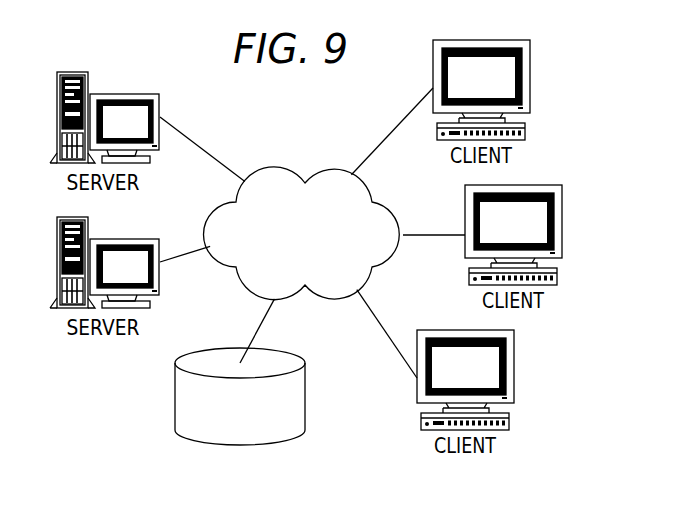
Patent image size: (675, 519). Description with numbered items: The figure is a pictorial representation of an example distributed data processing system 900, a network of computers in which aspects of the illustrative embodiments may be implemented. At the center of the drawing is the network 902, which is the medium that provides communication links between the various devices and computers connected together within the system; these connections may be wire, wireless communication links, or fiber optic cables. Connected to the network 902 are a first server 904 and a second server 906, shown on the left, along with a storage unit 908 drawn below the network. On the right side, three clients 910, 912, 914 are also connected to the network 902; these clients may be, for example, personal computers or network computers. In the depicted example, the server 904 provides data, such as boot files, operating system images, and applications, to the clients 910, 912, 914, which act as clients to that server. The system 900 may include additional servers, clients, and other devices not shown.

The distributed data processing system 900 is at (133, 380).
The network 902 is at (274, 168).
The server 904 is at (122, 94).
The server 906 is at (122, 239).
The storage unit 908 is at (305, 385).
The client 910 is at (530, 80).
The client 912 is at (563, 228).
The client 914 is at (513, 375).